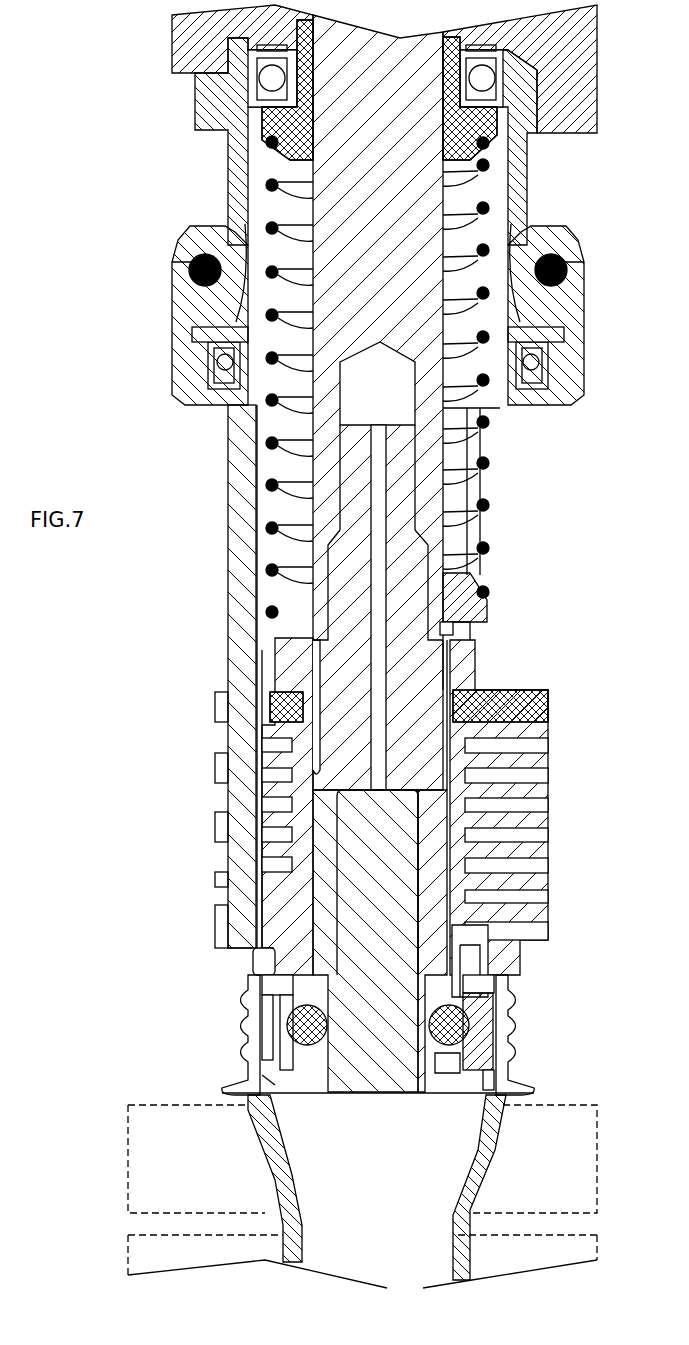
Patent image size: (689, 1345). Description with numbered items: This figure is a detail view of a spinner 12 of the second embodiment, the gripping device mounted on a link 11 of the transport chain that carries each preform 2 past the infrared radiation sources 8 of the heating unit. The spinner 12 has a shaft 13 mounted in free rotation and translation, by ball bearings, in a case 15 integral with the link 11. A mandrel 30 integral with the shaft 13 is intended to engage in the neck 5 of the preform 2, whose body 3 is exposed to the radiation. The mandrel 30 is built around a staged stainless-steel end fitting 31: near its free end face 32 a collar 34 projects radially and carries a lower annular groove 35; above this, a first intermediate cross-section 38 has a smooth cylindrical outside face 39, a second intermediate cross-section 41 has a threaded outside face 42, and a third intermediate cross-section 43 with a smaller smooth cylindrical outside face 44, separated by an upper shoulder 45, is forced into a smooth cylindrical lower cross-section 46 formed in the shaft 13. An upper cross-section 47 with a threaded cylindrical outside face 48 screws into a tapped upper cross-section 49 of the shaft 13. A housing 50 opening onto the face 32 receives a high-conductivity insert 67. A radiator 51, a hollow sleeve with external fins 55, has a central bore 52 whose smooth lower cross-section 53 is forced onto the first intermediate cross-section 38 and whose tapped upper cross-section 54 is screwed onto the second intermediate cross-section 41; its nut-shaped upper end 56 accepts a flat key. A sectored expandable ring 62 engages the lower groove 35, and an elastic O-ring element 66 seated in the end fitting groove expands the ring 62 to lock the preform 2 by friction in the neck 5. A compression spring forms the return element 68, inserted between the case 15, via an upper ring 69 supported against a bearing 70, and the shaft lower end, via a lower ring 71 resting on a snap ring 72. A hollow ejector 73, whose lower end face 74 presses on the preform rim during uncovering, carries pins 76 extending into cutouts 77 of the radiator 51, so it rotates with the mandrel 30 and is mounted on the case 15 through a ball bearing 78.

The preform 2 is at (262, 1181).
The body 3 is at (468, 1250).
The neck 5 is at (244, 1040).
The infrared radiation sources 8 is at (570, 1257).
The link 11 is at (597, 95).
The spinner 12 is at (518, 626).
The shaft 13 is at (375, 54).
The case 15 is at (527, 152).
The mandrel 30 is at (262, 962).
The end fitting 31 is at (262, 1093).
The free end face 32 is at (337, 1095).
The collar 34 is at (495, 1076).
The lower annular groove 35 is at (468, 1078).
The first intermediate cross-section 38 is at (430, 905).
The smooth cylindrical outside face 39 is at (470, 932).
The second intermediate cross-section 41 is at (420, 728).
The threaded outside face 42 is at (450, 681).
The third intermediate cross-section 43 is at (362, 594).
The smooth cylindrical outside face 44 is at (330, 560).
The upper shoulder 45 is at (436, 642).
The smooth cylindrical lower cross-section 46 is at (430, 576).
The upper cross-section 47 is at (355, 482).
The threaded cylindrical outside face 48 is at (333, 442).
The tapped upper cross-section 49 is at (348, 430).
The housing 50 is at (342, 820).
The radiator 51 is at (215, 878).
The central bore 52 is at (407, 850).
The smooth lower cross-section 53 is at (310, 868).
The tapped upper cross-section 54 is at (450, 716).
The fins 55 is at (540, 845).
The upper end 56 is at (262, 668).
The expandable ring 62 is at (482, 1016).
The elastic element 66 is at (458, 1026).
The insert 67 is at (375, 1072).
The return element 68 is at (490, 506).
The upper ring 69 is at (265, 124).
The bearing 70 is at (468, 80).
The lower ring 71 is at (482, 624).
The snap ring 72 is at (466, 630).
The ejector 73 is at (228, 463).
The lower end face 74 is at (250, 958).
The pins 76 is at (236, 778).
The cutouts 77 is at (222, 932).
The bearing 78 is at (223, 366).